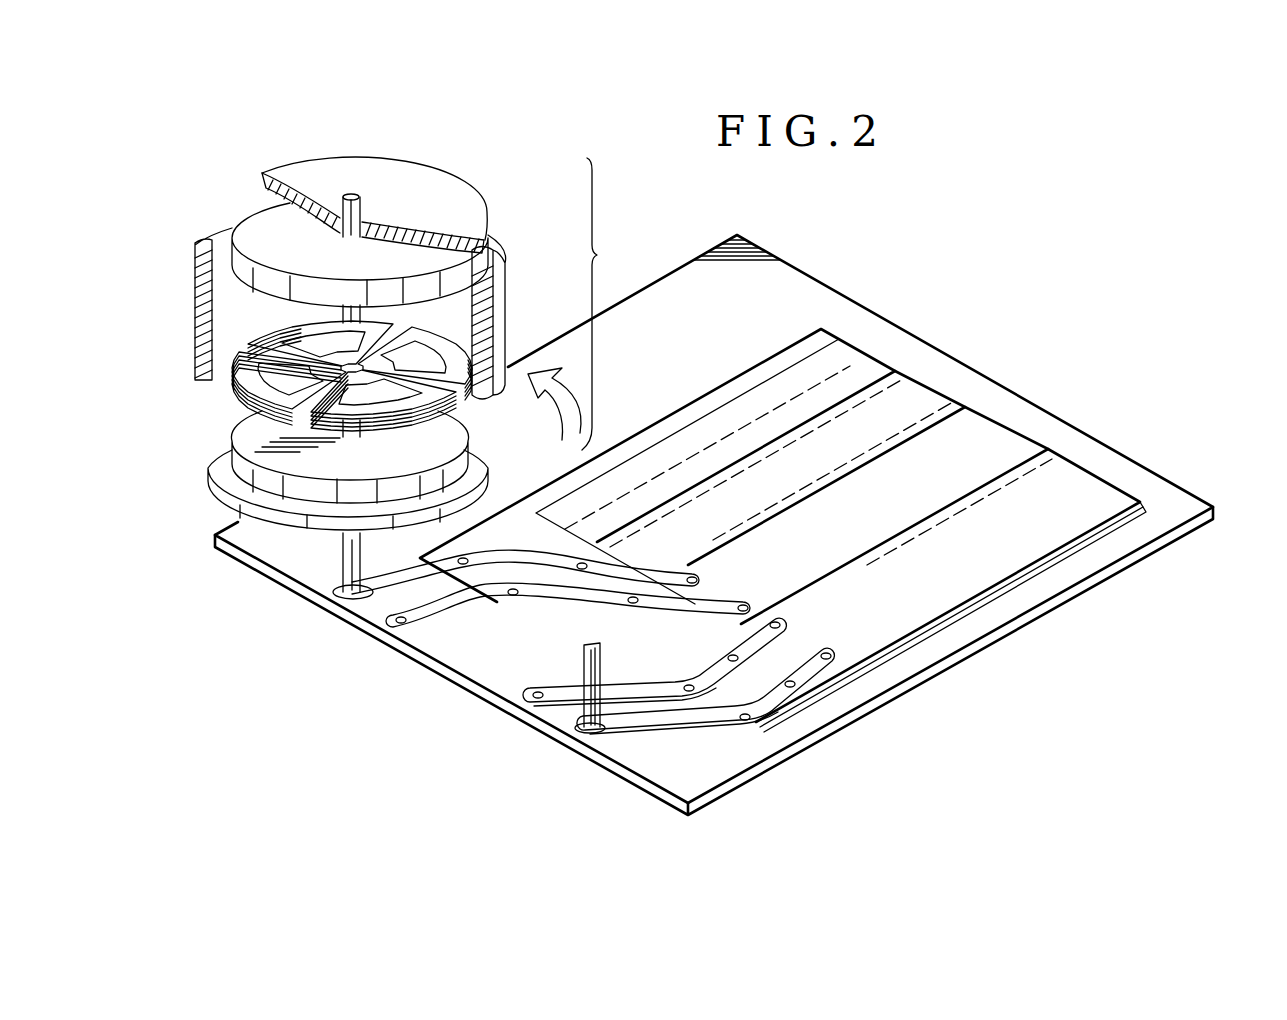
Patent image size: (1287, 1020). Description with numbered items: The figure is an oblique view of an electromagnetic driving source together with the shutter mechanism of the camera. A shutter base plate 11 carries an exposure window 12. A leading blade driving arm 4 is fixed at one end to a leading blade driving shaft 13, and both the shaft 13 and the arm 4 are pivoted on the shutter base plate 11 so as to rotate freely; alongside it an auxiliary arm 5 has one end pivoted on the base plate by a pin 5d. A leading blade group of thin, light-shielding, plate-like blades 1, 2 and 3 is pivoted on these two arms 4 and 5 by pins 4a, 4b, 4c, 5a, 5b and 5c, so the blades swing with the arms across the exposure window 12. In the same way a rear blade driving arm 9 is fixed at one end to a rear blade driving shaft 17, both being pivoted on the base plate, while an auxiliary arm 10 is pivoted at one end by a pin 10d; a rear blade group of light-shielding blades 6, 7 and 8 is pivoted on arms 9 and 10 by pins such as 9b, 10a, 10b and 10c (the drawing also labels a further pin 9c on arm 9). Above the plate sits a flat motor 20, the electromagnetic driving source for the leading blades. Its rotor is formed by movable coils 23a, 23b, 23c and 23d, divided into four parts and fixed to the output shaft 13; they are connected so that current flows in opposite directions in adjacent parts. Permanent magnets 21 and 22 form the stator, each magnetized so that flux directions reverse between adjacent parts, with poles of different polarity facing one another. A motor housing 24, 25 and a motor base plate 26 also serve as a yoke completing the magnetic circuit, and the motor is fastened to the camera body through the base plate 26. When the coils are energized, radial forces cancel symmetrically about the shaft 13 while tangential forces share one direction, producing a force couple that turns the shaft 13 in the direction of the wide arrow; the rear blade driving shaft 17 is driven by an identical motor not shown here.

The leading blade 1 is at (843, 372).
The leading blade 2 is at (915, 395).
The leading blade 3 is at (980, 425).
The leading blade driving arm 4 is at (500, 548).
The pin 4a is at (458, 558).
The pin 4b is at (581, 563).
The pin 4c is at (690, 576).
The auxiliary arm 5 is at (548, 594).
The pin 5a is at (513, 595).
The pin 5b is at (632, 603).
The pin 5c is at (742, 605).
The pin 5d is at (406, 623).
The rear blade 6 is at (905, 622).
The rear blade 7 is at (858, 690).
The rear blade 8 is at (775, 720).
The rear blade driving arm 9 is at (660, 730).
The pin 9b is at (745, 720).
The hole 9c is at (828, 653).
The auxiliary arm 10 is at (614, 689).
The pin 10a is at (689, 685).
The pin 10b is at (733, 661).
The pin 10c is at (780, 626).
The pin 10d is at (540, 692).
The shutter base plate 11 is at (452, 665).
The exposure window 12 is at (700, 415).
The leading blade driving shaft 13 is at (340, 568).
The rear blade driving shaft 17 is at (578, 705).
The flat motor 20 is at (379, 316).
The permanent magnet 21 is at (258, 212).
The permanent magnet 22 is at (245, 455).
The movable coil 23a is at (238, 398).
The movable coil 23b is at (440, 430).
The movable coil 23c is at (465, 398).
The movable coil 23d is at (290, 327).
The motor housing 24 is at (334, 163).
The motor housing 25 is at (488, 292).
The motor base plate 26 is at (222, 496).